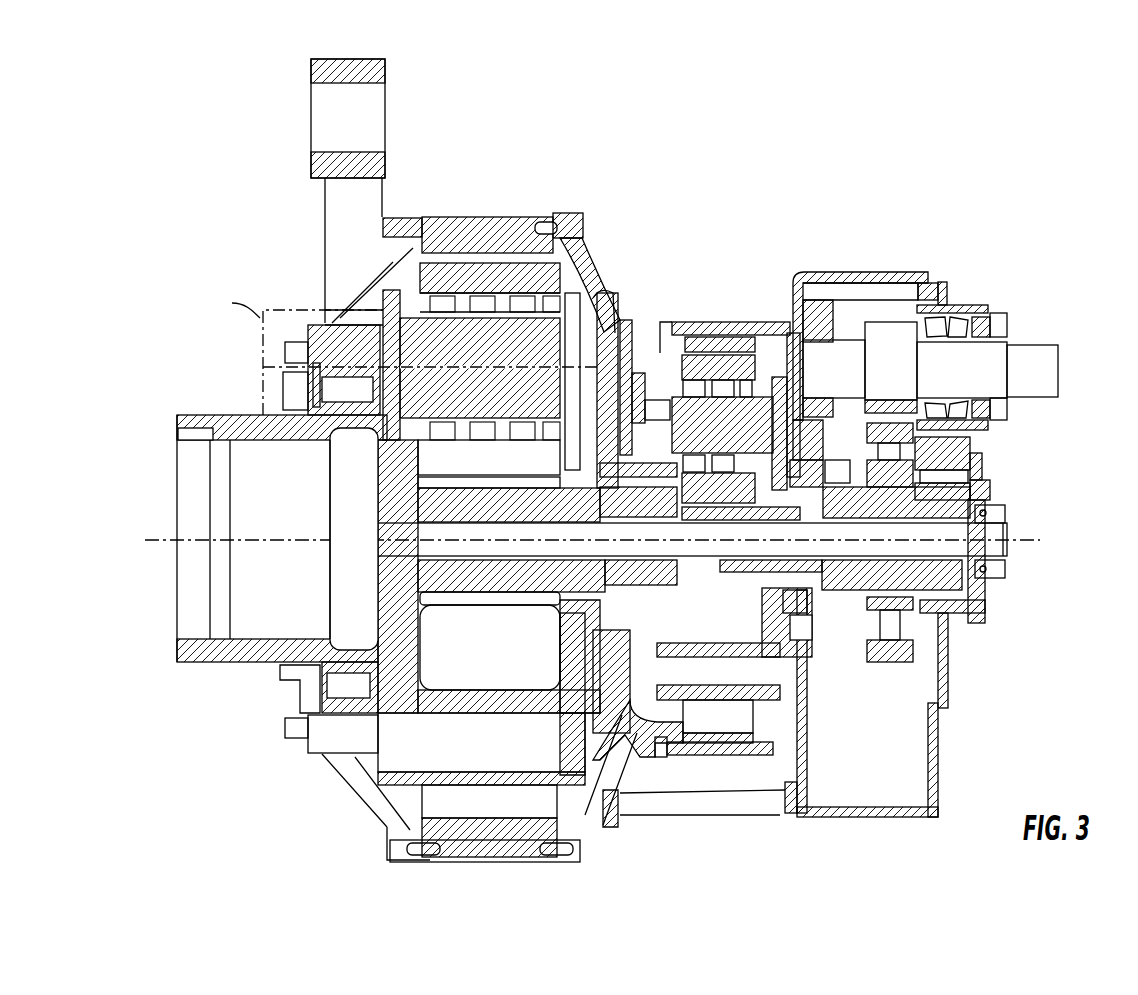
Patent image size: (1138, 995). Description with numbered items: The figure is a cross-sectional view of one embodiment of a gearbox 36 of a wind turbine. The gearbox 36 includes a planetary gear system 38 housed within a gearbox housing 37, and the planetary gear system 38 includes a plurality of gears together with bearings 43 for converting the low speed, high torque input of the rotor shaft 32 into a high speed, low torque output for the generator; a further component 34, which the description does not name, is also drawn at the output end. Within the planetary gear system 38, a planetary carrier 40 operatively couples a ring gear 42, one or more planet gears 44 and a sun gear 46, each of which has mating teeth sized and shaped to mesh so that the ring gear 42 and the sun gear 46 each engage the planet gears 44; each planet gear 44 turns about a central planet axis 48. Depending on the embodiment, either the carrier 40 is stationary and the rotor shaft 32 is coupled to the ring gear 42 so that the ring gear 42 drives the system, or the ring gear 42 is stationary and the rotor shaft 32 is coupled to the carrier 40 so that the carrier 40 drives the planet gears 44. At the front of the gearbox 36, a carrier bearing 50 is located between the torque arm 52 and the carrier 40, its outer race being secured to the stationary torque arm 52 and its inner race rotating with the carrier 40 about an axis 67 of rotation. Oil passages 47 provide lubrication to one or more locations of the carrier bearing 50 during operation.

The rotor shaft 32 is at (177, 475).
The output shaft 34 is at (1035, 345).
The gearbox 36 is at (940, 212).
The gearbox housing 37 is at (858, 265).
The planetary gear system 38 is at (407, 262).
The planetary carrier 40 is at (248, 417).
The ring gear 42 is at (480, 230).
The bearings 43 is at (593, 393).
The planet gears 44 is at (541, 343).
The sun gear 46 is at (460, 575).
The oil passages 47 is at (522, 257).
The central planet axis 48 is at (440, 322).
The carrier bearing 50 is at (337, 355).
The torque arm 52 is at (340, 360).
The axis 67 is at (160, 541).